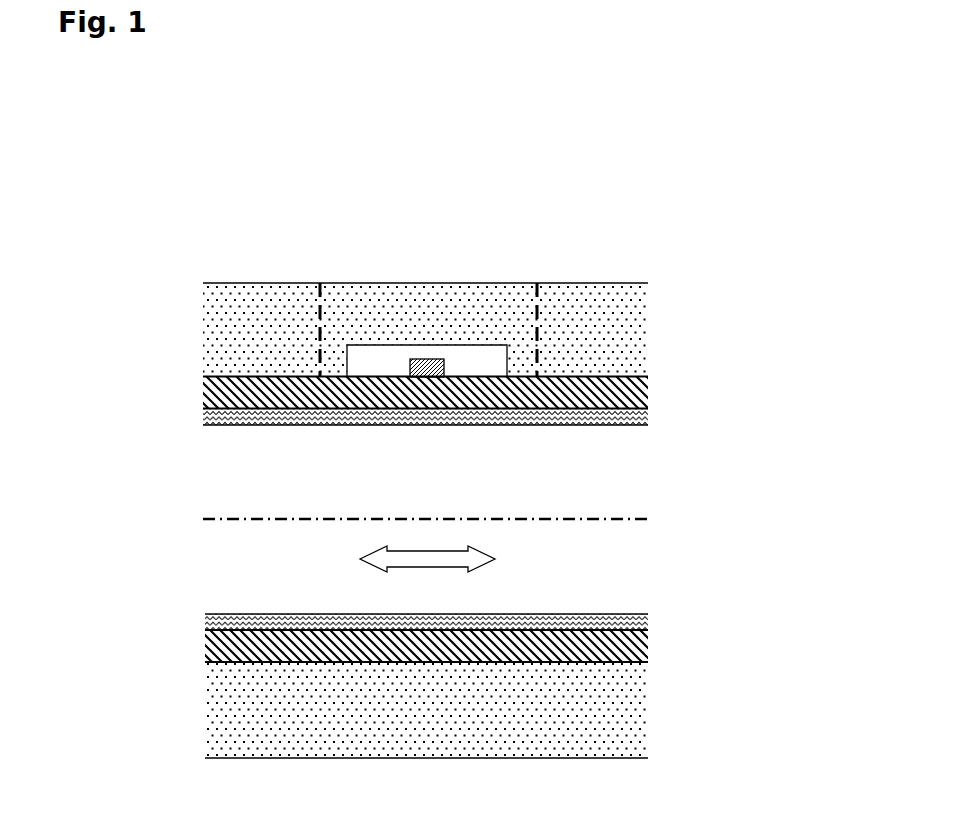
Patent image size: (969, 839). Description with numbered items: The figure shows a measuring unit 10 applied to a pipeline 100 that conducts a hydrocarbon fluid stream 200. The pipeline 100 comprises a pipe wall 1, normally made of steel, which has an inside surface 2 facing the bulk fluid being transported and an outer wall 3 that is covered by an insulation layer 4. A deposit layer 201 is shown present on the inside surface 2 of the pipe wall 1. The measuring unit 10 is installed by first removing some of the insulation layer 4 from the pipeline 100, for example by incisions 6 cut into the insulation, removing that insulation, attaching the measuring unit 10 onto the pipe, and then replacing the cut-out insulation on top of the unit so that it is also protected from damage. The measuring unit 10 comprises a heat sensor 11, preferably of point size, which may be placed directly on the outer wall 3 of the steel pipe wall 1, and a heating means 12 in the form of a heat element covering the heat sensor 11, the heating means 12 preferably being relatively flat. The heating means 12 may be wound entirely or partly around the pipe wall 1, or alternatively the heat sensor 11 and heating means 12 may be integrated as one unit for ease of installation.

The pipeline 100 is at (465, 444).
The measuring unit 10 is at (433, 262).
The heat sensor 11 is at (425, 362).
The heating means 12 is at (470, 352).
The incisions 6 is at (320, 313).
The insulation layer 4 is at (628, 323).
The outer wall 3 is at (632, 373).
The pipe wall 1 is at (637, 387).
The inside surface 2 is at (640, 410).
The deposit layer 201 is at (632, 423).
The hydrocarbon fluid stream 200 is at (452, 488).